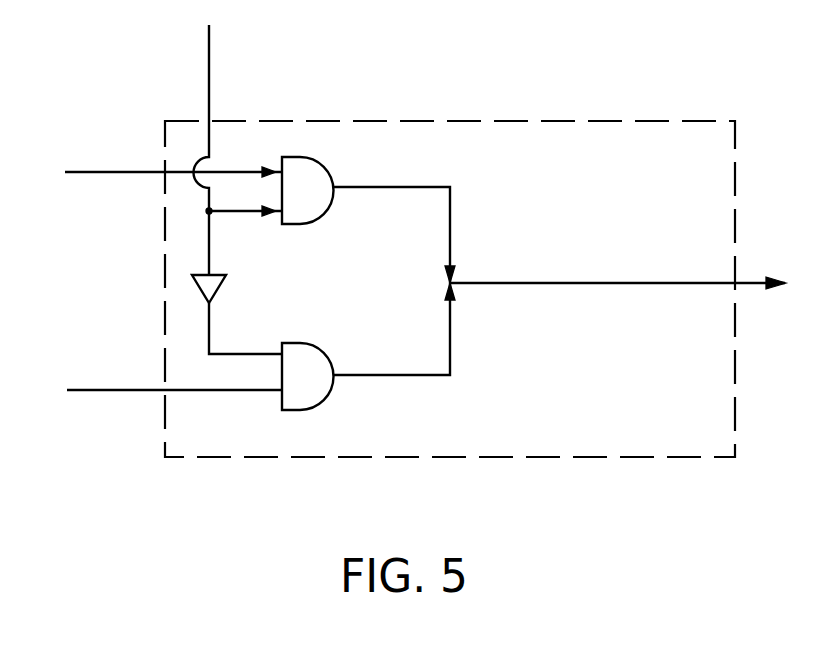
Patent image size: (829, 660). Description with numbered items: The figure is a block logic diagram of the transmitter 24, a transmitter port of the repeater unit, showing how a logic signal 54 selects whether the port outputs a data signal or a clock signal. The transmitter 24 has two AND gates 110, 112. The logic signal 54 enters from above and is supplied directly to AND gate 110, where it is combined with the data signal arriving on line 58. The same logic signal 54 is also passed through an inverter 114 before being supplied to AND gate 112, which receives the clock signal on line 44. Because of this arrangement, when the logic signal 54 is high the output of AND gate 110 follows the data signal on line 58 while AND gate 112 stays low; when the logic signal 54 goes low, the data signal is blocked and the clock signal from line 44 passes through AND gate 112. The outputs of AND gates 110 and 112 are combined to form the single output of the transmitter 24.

The transmitter 24 is at (578, 118).
The logic signal 54 is at (209, 75).
The data signal line 58 is at (106, 170).
The clock signal line 44 is at (117, 388).
The AND gate 110 is at (312, 210).
The AND gate 112 is at (318, 393).
The inverter 114 is at (222, 283).